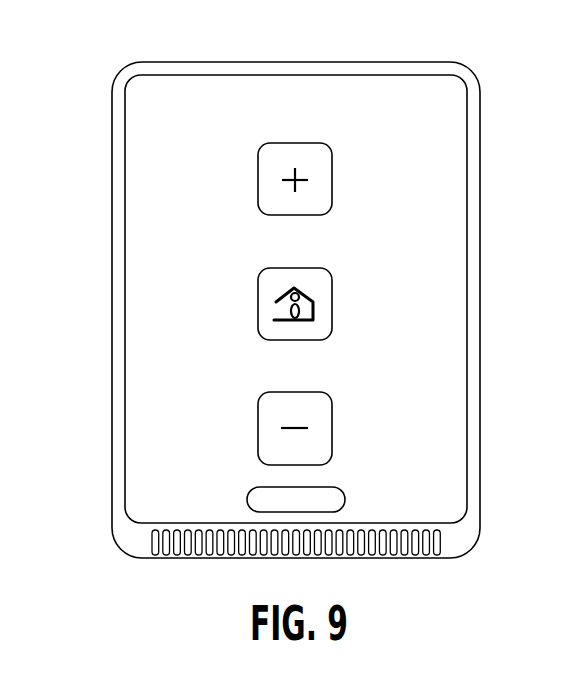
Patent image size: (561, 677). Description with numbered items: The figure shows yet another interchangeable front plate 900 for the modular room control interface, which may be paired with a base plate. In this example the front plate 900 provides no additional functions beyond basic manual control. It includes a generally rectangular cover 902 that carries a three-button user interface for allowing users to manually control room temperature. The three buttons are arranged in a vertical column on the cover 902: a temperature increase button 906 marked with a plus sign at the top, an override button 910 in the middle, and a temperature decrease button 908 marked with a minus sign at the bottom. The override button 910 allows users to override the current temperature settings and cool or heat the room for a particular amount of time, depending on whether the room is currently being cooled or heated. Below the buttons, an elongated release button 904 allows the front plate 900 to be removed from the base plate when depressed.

The front plate 900 is at (269, 280).
The cover 902 is at (220, 376).
The release button 904 is at (344, 498).
The temperature increase button 906 is at (332, 174).
The temperature decrease button 908 is at (332, 428).
The override button 910 is at (332, 299).